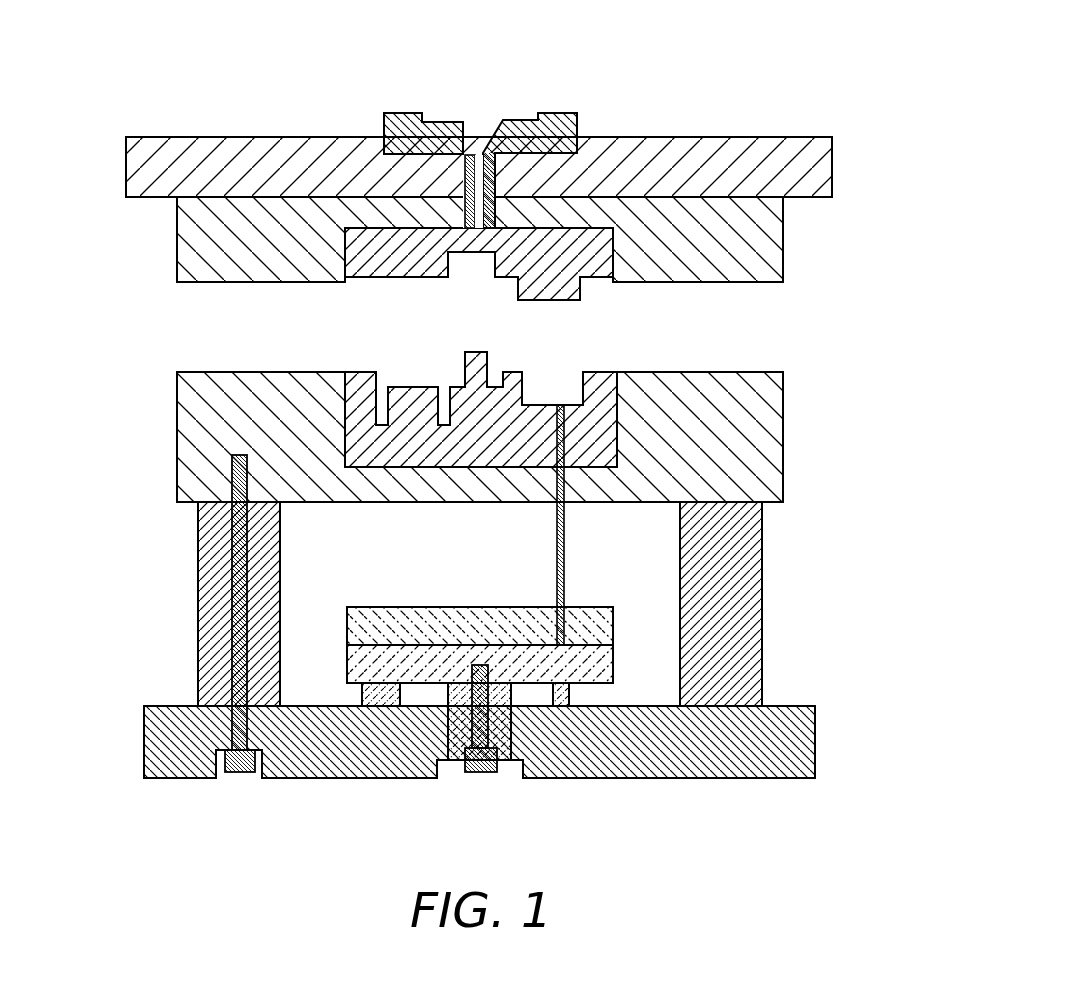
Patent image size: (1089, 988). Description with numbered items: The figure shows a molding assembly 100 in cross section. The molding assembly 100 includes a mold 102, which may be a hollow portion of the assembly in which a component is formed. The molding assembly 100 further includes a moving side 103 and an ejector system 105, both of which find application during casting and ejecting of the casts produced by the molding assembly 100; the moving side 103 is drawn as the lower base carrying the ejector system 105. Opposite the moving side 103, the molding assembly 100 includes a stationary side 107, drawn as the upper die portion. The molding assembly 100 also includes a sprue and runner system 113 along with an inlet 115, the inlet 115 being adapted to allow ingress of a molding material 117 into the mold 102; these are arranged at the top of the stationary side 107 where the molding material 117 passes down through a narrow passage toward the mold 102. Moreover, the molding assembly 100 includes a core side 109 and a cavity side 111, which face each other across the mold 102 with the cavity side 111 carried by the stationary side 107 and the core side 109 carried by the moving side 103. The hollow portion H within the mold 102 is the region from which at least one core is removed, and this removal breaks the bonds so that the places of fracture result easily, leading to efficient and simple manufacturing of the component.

The molding assembly 100 is at (569, 393).
The mold 102 is at (798, 320).
The moving side 103 is at (785, 740).
The ejector system 105 is at (613, 620).
The stationary side 107 is at (768, 232).
The core side 109 is at (357, 408).
The cavity side 111 is at (372, 252).
The sprue and runner system 113 is at (557, 132).
The inlet 115 is at (480, 148).
The molding material 117 is at (479, 205).
The hollow portion H is at (548, 345).